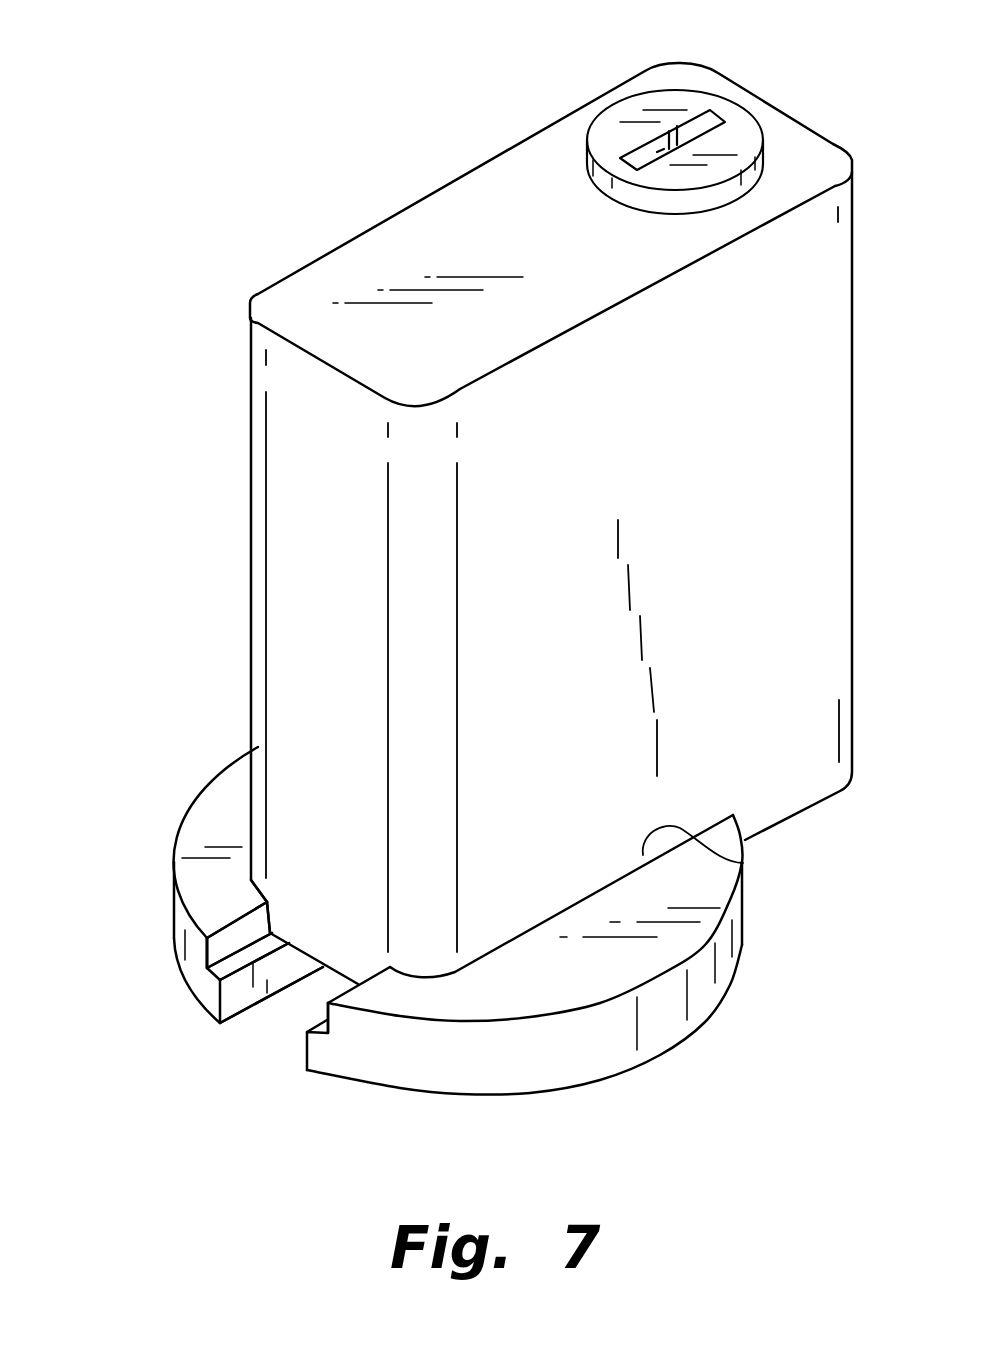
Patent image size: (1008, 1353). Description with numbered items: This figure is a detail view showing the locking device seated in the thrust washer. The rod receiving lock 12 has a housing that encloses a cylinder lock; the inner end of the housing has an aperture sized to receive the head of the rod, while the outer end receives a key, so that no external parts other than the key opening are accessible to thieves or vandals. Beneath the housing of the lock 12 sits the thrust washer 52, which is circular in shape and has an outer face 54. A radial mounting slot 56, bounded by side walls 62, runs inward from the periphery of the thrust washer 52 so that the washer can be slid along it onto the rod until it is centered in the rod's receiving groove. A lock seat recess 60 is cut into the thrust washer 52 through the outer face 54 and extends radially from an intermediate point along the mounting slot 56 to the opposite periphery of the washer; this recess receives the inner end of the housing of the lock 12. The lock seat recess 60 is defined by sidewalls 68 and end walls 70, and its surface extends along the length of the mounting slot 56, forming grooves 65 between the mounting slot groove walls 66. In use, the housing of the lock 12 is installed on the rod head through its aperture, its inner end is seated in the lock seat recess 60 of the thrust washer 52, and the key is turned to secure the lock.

The rod receiving lock 12 is at (312, 262).
The thrust washer 52 is at (178, 842).
The outer face 54 is at (242, 834).
The radial mounting slot 56 is at (307, 1052).
The lock seat recess 60 is at (283, 945).
The side walls 62 is at (230, 998).
The grooves 65 is at (222, 968).
The mounting slot groove walls 66 is at (248, 927).
The sidewalls 68 is at (743, 863).
The end walls 70 is at (270, 913).